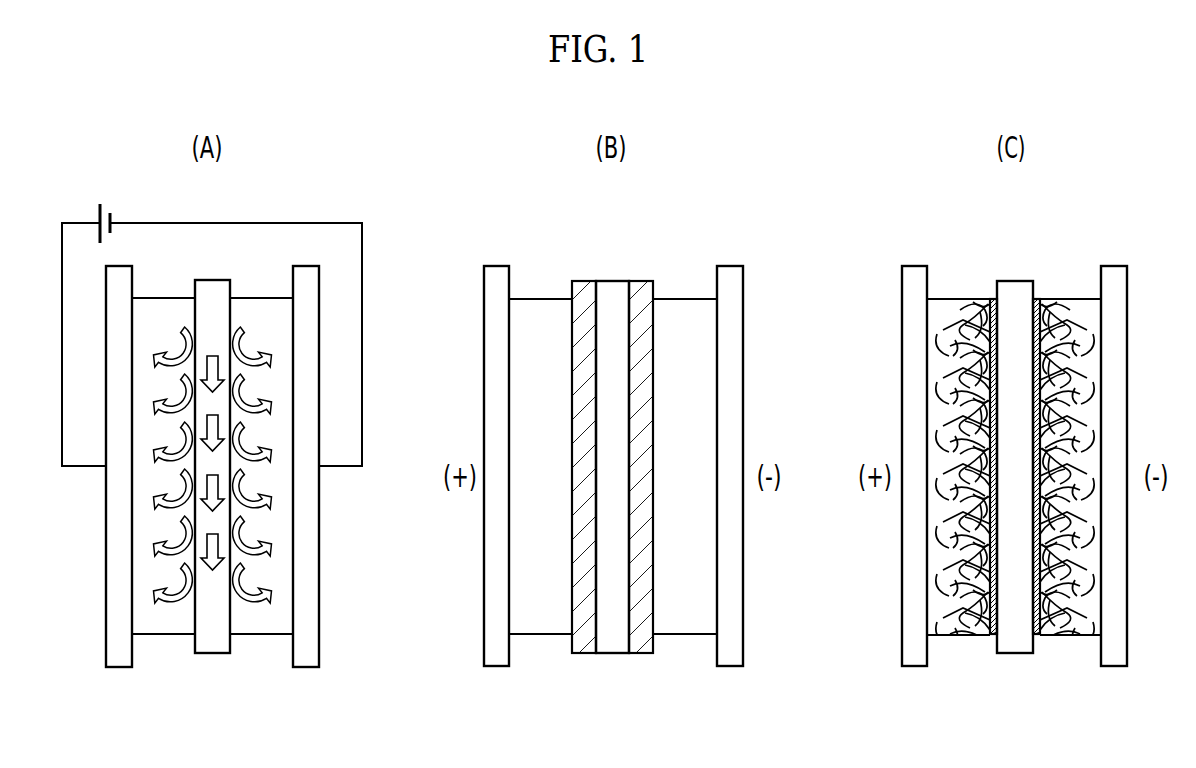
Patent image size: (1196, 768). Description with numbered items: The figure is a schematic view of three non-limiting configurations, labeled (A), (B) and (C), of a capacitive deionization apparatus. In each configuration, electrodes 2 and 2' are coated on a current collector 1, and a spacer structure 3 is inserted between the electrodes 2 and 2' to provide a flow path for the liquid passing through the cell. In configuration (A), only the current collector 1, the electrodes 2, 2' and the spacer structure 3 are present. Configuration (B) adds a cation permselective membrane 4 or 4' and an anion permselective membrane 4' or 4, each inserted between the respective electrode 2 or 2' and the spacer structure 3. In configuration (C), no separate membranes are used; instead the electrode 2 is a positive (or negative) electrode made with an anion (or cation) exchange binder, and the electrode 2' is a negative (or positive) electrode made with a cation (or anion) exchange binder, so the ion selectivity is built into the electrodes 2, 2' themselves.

The current collector 1 is at (616, 496).
The electrode 2 is at (561, 498).
The electrode 2' is at (665, 498).
The spacer structure 3 is at (614, 503).
The cation permselective membrane 4 is at (644, 504).
The anion permselective membrane 4' is at (583, 510).